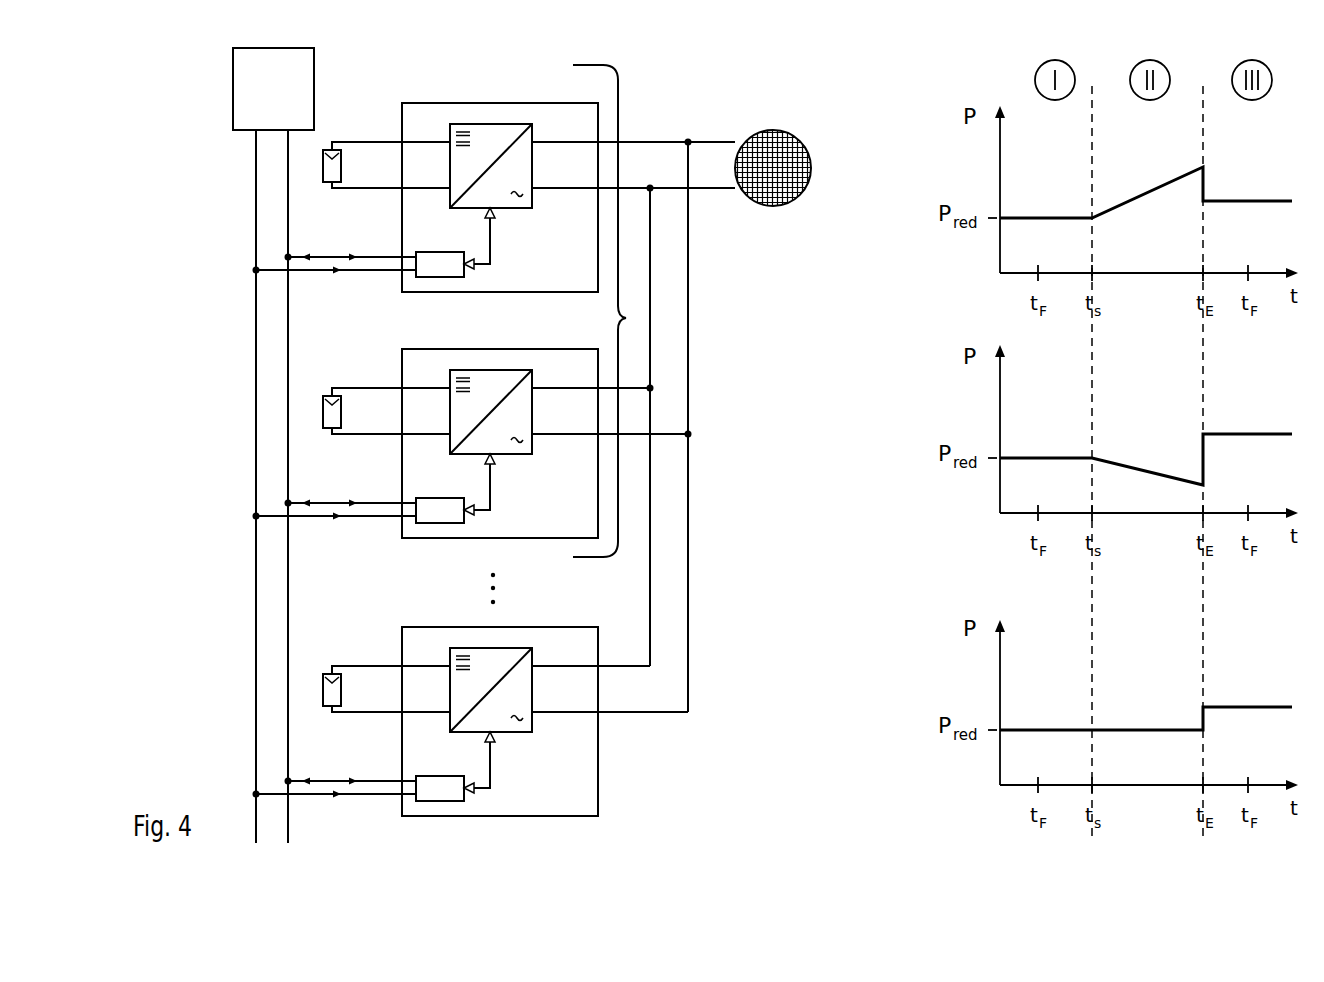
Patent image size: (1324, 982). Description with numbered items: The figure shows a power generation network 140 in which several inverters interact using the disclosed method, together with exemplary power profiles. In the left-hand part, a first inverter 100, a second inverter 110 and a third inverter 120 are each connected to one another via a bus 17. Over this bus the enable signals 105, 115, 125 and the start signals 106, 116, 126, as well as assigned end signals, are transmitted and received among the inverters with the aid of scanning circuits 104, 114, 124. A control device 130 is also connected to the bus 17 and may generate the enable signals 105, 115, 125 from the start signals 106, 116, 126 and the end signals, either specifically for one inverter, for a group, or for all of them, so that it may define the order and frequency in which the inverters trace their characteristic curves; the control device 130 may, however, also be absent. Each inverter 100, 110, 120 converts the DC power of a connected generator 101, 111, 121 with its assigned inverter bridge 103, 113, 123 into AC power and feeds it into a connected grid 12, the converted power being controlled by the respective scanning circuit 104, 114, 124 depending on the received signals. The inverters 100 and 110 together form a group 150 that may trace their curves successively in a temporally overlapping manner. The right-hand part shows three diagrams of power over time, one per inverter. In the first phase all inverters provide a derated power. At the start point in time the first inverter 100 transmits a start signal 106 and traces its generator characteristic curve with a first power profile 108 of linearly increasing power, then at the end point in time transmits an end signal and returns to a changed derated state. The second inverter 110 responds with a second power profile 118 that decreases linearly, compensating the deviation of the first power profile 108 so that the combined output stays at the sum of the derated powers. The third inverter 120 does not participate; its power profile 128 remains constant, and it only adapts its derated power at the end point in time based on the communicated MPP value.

The grid 12 is at (800, 147).
The bus 17 is at (226, 406).
The first inverter 100 is at (507, 102).
The generator 101 is at (323, 182).
The inverter bridge 103 is at (532, 135).
The scanning circuit 104 is at (440, 253).
The enable signal 105 is at (367, 275).
The start signal 106 is at (367, 253).
The first power profile 108 is at (1132, 202).
The second inverter 110 is at (500, 429).
The generator 111 is at (372, 429).
The inverter bridge 113 is at (517, 402).
The scanning circuit 114 is at (455, 488).
The enable signal 115 is at (335, 537).
The start signal 116 is at (351, 485).
The second power profile 118 is at (1138, 467).
The third inverter 120 is at (500, 707).
The generator 121 is at (372, 707).
The inverter bridge 123 is at (517, 680).
The scanning circuit 124 is at (455, 766).
The enable signal 125 is at (335, 815).
The start signal 126 is at (351, 763).
The power profile 128 is at (1135, 728).
The control device 130 is at (308, 65).
The power generation network 140 is at (725, 796).
The group 150 is at (627, 318).